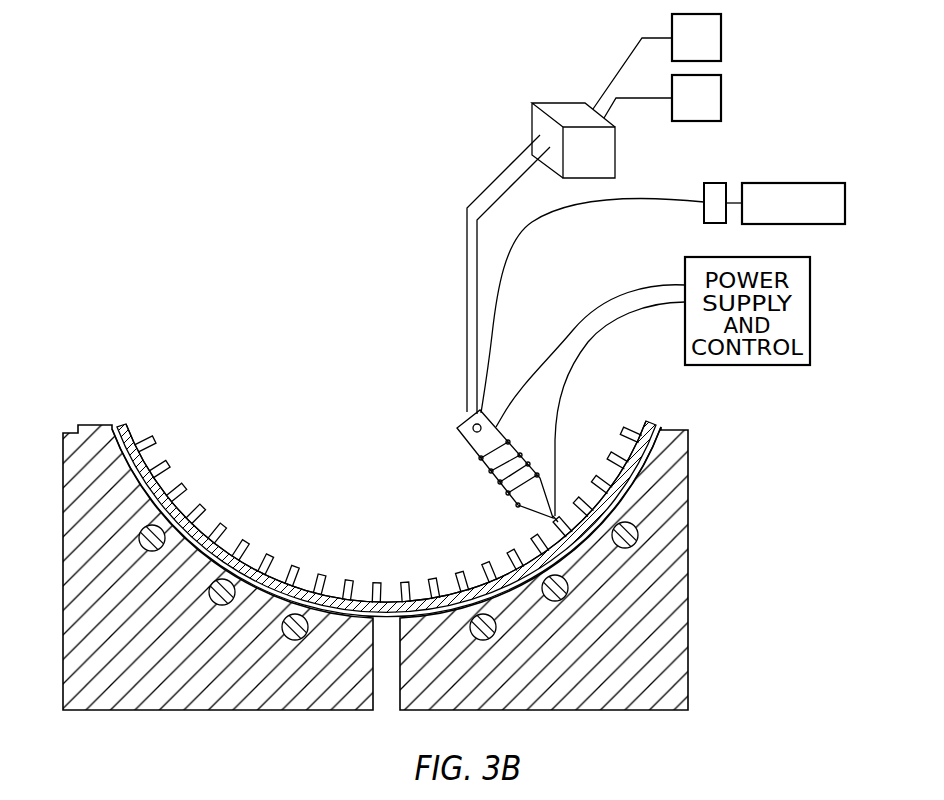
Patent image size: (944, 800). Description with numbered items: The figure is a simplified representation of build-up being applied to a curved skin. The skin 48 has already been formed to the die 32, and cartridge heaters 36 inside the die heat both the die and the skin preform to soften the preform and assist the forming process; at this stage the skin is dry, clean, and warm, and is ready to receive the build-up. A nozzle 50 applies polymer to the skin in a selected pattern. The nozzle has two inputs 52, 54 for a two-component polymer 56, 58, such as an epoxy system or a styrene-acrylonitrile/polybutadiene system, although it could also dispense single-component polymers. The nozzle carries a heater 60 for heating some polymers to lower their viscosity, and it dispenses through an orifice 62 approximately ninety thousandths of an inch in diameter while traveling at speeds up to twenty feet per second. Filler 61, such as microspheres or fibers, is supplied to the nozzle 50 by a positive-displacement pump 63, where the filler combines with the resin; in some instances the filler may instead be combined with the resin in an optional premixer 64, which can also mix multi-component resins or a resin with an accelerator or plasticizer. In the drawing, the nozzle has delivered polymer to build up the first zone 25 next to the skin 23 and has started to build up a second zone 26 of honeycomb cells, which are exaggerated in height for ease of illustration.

The skin 23 is at (668, 424).
The first zone 25 is at (645, 424).
The second zone 26 is at (617, 430).
The die 32 is at (690, 530).
The cartridge heaters 36 is at (138, 539).
The skin 48 is at (173, 481).
The nozzle 50 is at (463, 436).
The nozzle input 52 is at (467, 330).
The nozzle input 54 is at (482, 326).
The polymer component A 56 is at (721, 38).
The polymer component B 58 is at (721, 98).
The heater 60 is at (489, 469).
The filler 61 is at (845, 203).
The orifice 62 is at (555, 516).
The positive-displacement pump 63 is at (713, 183).
The premixer 64 is at (560, 103).